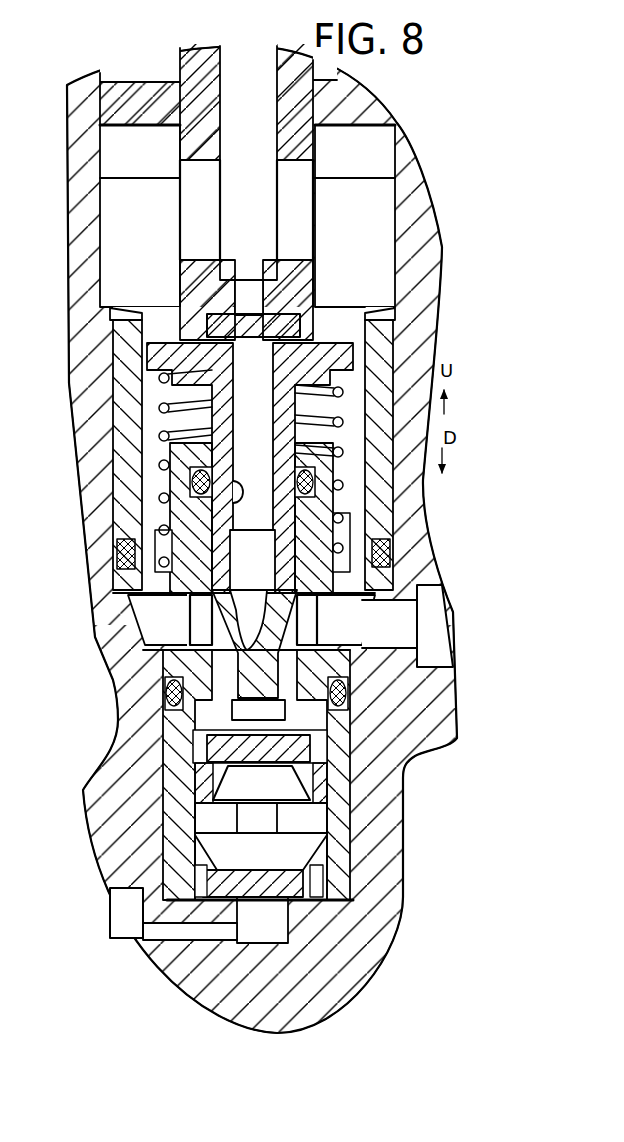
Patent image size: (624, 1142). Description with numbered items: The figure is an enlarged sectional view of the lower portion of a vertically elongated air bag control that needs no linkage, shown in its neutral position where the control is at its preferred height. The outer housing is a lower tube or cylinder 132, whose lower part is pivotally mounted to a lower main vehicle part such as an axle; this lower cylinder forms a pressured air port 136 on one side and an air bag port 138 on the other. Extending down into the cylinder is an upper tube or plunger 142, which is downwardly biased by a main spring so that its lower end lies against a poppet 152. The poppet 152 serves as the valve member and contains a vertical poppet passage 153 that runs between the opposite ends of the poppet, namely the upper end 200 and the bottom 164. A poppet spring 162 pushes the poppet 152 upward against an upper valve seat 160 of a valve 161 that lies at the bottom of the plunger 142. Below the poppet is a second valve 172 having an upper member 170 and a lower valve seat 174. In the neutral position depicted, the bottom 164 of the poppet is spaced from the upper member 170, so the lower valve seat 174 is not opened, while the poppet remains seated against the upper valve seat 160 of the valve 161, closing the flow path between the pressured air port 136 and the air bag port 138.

The lower tube or cylinder 132 is at (106, 680).
The pressured air port 136 is at (130, 908).
The air bag port 138 is at (437, 600).
The upper tube or plunger 142 is at (357, 260).
The poppet 152 is at (195, 618).
The poppet passage 153 is at (245, 485).
The upper valve seat 160 is at (160, 364).
The valve 161 is at (340, 331).
The poppet spring 162 is at (163, 433).
The bottom of the poppet 164 is at (210, 733).
The upper member 170 is at (322, 782).
The valve 172 is at (340, 820).
The lower valve seat 174 is at (215, 778).
The poppet end 200 is at (305, 297).